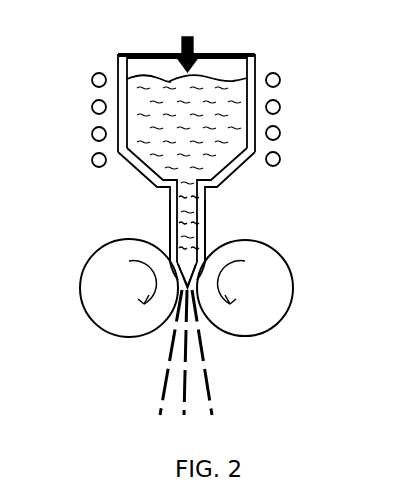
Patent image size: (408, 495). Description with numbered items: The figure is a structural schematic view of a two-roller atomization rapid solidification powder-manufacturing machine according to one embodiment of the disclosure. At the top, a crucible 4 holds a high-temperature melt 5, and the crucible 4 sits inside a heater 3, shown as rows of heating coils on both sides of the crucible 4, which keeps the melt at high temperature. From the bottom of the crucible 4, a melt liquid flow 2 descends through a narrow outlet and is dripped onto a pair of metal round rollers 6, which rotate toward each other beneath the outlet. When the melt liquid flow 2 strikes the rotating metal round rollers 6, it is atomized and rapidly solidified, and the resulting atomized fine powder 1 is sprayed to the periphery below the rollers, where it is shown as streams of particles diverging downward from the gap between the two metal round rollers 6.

The atomized fine powder 1 is at (205, 365).
The melt liquid flow 2 is at (205, 208).
The heater 3 is at (278, 129).
The crucible 4 is at (253, 72).
The high-temperature melt 5 is at (147, 112).
The metal round roller 6 is at (96, 254).